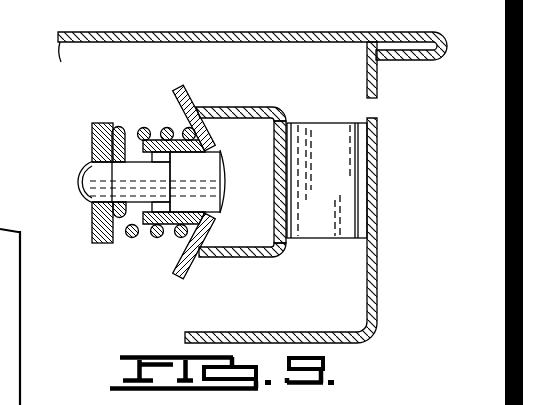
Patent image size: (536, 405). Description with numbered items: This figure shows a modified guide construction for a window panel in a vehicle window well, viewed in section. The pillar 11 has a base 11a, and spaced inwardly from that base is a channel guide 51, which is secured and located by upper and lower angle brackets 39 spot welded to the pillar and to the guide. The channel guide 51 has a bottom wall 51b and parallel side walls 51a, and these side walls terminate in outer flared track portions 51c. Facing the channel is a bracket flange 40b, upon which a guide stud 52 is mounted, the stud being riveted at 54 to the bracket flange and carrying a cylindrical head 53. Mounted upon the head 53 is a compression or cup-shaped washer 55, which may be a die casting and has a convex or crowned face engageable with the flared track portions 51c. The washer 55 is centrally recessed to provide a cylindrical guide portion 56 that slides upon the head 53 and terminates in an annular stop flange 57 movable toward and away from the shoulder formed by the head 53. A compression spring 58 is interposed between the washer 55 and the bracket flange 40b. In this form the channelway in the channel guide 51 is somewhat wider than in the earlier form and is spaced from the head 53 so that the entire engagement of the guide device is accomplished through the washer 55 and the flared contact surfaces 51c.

The pillar 11 is at (370, 118).
The base of the pillar 11a is at (360, 261).
The angle bracket 39 is at (314, 234).
The bracket flange 40b is at (95, 122).
The channel guide 51 is at (268, 107).
The side walls 51a is at (228, 107).
The bottom wall 51b is at (271, 176).
The flared track portions 51c is at (177, 92).
The guide stud 52 is at (125, 157).
The cylindrical head 53 is at (212, 157).
The rivet 54 is at (82, 182).
The cup-shaped washer 55 is at (165, 127).
The cylindrical guide portion 56 is at (163, 234).
The annular stop flange 57 is at (140, 234).
The compression spring 58 is at (120, 238).